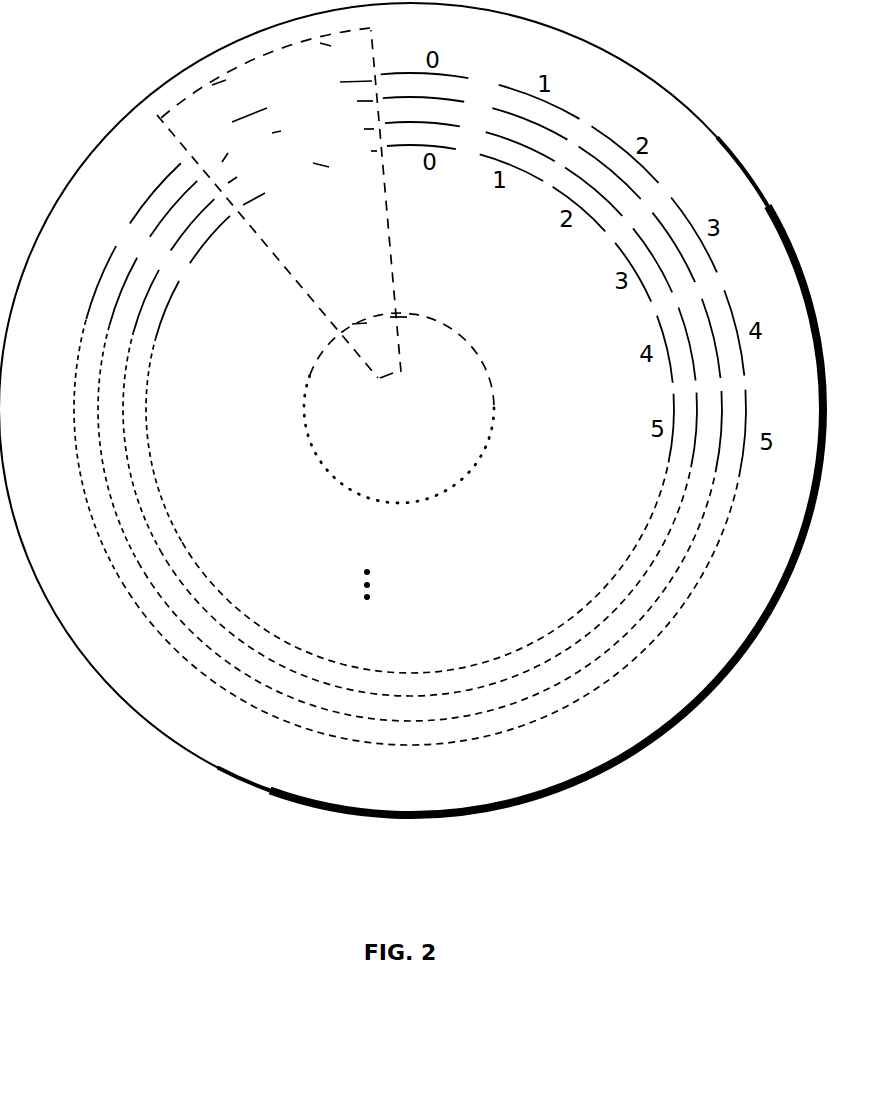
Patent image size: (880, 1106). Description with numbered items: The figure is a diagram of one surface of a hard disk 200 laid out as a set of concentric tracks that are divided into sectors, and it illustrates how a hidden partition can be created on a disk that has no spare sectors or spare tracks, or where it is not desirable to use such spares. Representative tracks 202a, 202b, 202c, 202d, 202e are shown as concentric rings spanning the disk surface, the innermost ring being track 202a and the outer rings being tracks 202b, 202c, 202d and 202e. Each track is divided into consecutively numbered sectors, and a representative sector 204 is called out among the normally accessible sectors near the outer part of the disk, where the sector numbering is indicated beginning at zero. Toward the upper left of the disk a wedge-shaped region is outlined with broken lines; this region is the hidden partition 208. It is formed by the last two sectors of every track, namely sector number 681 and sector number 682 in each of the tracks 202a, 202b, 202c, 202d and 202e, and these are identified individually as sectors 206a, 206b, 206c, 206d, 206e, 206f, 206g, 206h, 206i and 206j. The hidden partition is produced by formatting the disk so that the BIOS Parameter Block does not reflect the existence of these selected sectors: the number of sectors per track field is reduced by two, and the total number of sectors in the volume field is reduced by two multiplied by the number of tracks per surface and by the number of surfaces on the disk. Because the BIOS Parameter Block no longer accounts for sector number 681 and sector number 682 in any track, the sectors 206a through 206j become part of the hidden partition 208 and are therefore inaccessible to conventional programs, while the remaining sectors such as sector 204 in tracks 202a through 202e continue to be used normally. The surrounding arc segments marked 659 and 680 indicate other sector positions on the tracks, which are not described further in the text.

The surface of a hard disk 200 is at (122, 767).
The track 202a is at (360, 493).
The track 202b is at (332, 658).
The track 202c is at (348, 686).
The track 202d is at (348, 707).
The track 202e is at (350, 732).
The sector 204 is at (608, 137).
The sector 206a is at (242, 85).
The sector 206b is at (343, 51).
The sector 206c is at (260, 133).
The sector 206d is at (342, 105).
The sector 206e is at (270, 159).
The sector 206f is at (353, 129).
The sector 206g is at (285, 171).
The sector 206h is at (360, 151).
The sector 206i is at (352, 324).
The sector 206j is at (390, 317).
The hidden partition 208 is at (275, 259).
The track segment 659 is at (129, 292).
The track segment 680 is at (179, 212).
The sector number 681 is at (268, 105).
The sector number 682 is at (350, 65).